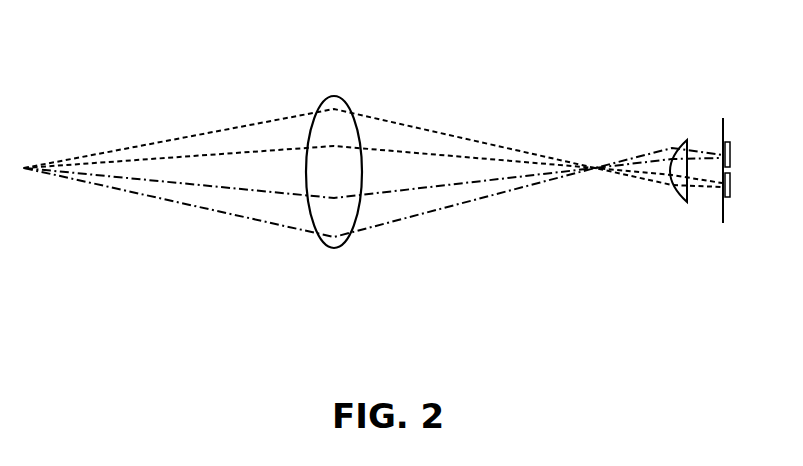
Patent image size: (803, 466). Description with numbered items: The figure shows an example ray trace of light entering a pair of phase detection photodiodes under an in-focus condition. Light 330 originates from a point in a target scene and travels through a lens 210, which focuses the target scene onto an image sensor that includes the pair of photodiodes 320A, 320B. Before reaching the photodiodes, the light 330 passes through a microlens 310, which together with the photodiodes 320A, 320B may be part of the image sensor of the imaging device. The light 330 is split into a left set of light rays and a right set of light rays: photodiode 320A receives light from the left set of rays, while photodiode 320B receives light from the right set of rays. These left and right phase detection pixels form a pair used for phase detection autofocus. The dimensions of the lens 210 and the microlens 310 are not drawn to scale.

The light 330 is at (24, 168).
The lens 210 is at (336, 96).
The microlens 310 is at (686, 141).
The photodiode 320A is at (731, 148).
The photodiode 320B is at (731, 184).